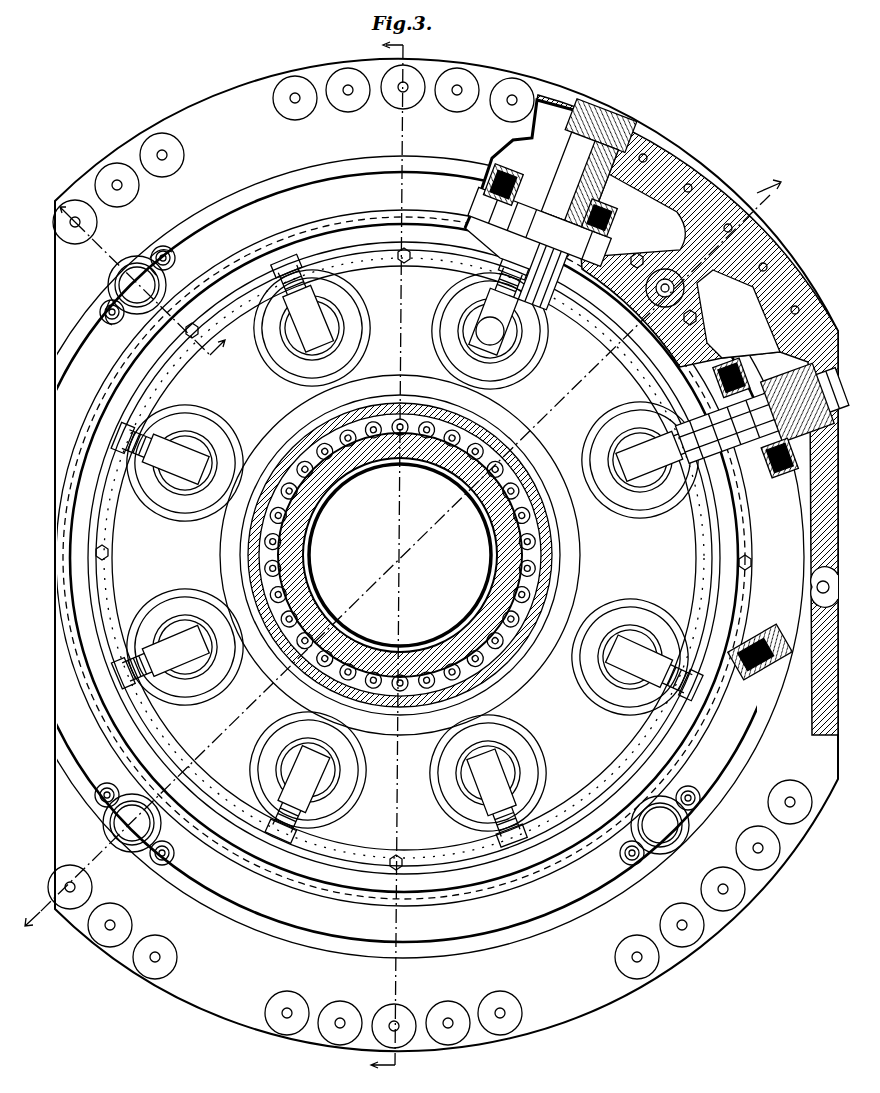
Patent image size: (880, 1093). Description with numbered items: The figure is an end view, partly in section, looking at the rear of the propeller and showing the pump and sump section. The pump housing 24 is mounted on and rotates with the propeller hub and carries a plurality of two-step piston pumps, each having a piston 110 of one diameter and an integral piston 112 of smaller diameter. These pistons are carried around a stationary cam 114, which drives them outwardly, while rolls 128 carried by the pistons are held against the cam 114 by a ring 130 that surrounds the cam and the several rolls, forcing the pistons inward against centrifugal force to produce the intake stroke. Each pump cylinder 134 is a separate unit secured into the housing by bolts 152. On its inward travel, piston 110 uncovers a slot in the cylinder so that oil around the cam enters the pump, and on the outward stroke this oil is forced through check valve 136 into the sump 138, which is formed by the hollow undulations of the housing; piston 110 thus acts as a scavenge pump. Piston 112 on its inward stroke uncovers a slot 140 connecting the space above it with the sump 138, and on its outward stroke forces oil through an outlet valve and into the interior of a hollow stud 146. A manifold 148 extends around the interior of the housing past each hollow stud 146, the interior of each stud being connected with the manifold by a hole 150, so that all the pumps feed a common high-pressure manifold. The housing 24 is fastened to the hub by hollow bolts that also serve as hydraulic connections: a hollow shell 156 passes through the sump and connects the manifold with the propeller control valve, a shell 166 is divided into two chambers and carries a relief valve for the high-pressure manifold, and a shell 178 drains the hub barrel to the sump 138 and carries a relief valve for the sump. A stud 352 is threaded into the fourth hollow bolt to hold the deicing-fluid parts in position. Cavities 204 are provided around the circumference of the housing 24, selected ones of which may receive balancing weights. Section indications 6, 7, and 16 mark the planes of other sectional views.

The housing 24 is at (245, 1022).
The cavities 204 is at (162, 145).
The stud 352 is at (168, 276).
The shell 166 is at (135, 852).
The hollow shell 156 is at (658, 852).
The ring 130 is at (108, 530).
The manifold 148 is at (470, 252).
The cam 114 is at (585, 582).
The piston 110 is at (155, 420).
The rolls 128 is at (185, 605).
The shell 178 is at (494, 323).
The hole 150 is at (478, 318).
The hollow stud 146 is at (540, 300).
The sump 138 is at (805, 290).
The pump cylinder 134 is at (678, 155).
The slot 140 is at (549, 194).
The check valve 136 is at (503, 185).
The piston 112 is at (790, 465).
The bolts 152 is at (605, 222).
The section line 6- 6 is at (400, 558).
The section line 7- 7 is at (411, 566).
The section line 16- 16 is at (153, 260).